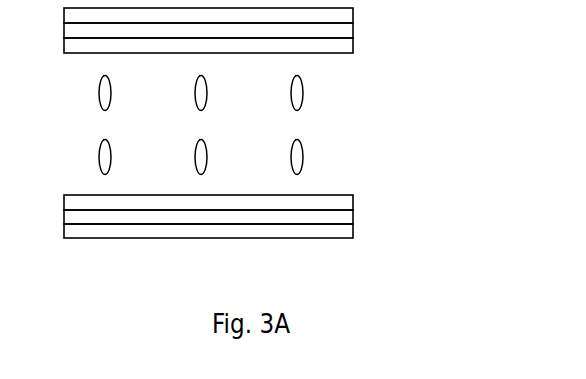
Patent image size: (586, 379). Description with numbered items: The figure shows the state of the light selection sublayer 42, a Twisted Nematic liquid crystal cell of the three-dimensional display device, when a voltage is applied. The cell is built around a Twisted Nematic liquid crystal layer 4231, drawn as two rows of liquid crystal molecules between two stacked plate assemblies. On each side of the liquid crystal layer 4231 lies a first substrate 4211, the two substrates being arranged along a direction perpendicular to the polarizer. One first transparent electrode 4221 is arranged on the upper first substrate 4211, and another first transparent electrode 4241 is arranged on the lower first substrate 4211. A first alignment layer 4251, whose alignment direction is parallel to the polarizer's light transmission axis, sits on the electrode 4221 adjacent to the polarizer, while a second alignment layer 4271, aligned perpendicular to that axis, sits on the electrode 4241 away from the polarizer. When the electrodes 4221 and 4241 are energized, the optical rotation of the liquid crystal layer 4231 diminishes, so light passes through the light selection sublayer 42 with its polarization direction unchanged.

The light selection sublayer 42 is at (239, 136).
The first substrate 4211 is at (356, 10).
The first transparent electrode 4221 is at (337, 32).
The first alignment layer 4251 is at (340, 44).
The Twisted Nematic liquid crystal layer 4231 is at (313, 102).
The second alignment layer 4271 is at (337, 201).
The first transparent electrode 4241 is at (337, 214).